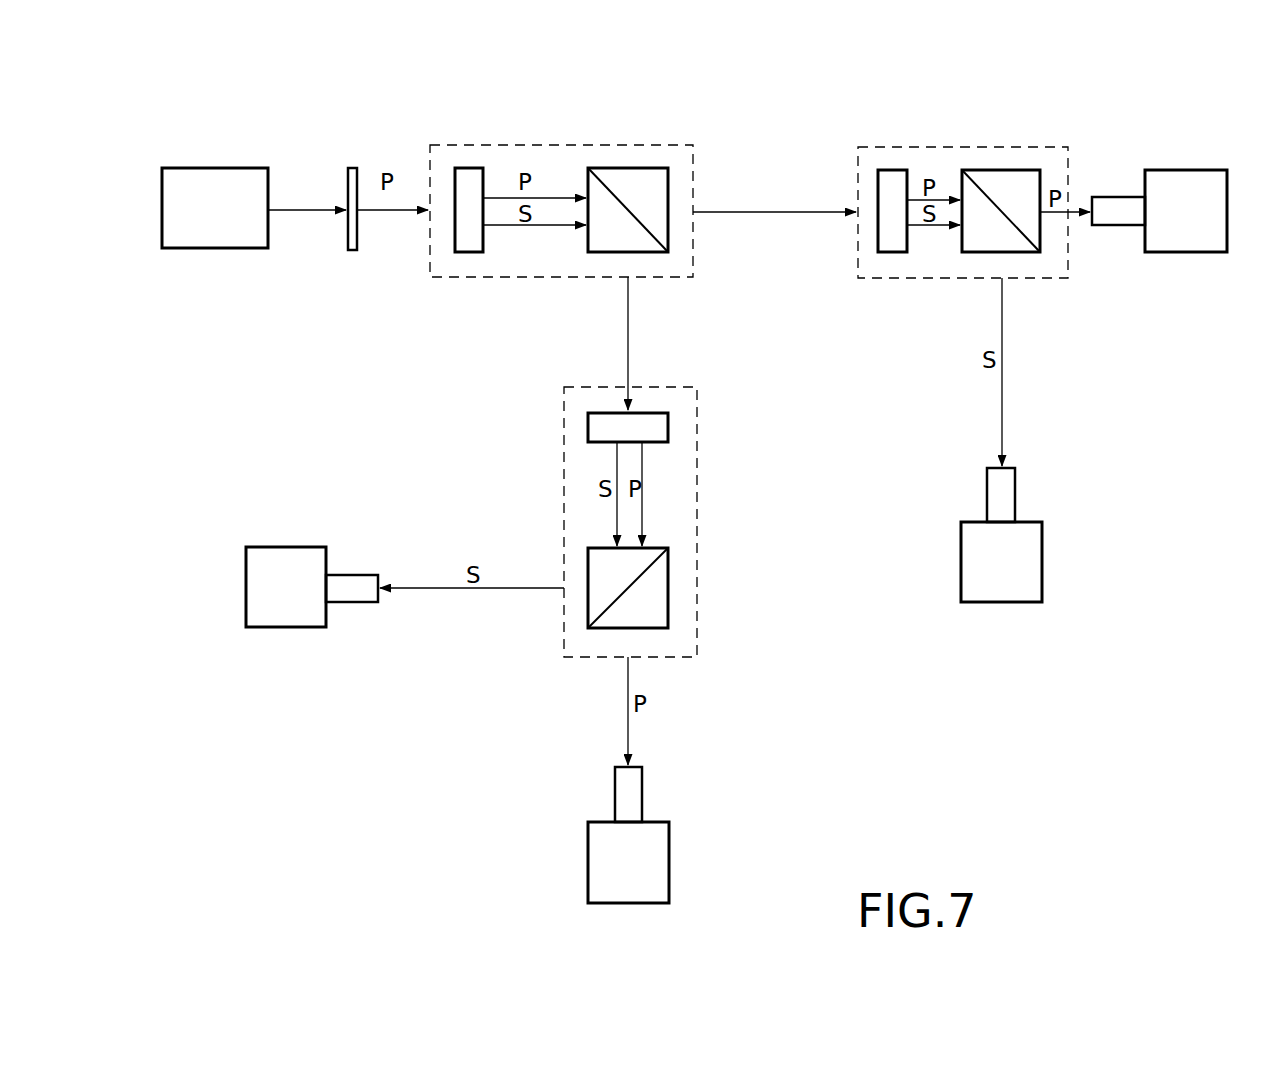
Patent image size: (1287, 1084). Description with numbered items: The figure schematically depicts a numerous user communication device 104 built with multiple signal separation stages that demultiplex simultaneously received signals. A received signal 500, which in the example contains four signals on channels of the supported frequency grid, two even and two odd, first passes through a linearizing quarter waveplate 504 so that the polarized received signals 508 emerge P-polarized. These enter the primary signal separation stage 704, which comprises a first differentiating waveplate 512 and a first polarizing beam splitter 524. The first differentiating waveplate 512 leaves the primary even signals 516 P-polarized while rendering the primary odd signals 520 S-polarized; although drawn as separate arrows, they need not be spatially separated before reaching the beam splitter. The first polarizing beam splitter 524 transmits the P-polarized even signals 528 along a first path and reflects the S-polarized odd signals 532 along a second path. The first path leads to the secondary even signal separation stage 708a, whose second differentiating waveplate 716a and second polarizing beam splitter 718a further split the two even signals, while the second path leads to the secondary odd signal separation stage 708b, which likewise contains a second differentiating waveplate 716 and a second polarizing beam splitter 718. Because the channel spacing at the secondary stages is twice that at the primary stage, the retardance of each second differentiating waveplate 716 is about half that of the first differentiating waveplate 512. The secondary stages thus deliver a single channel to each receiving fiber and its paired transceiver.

The numerous user communication device 104 is at (256, 119).
The received signal 500 is at (310, 208).
The linearizing quarter waveplate 504 is at (352, 252).
The polarized received signals 508 is at (398, 213).
The primary signal separation stage 704 is at (477, 280).
The first differentiating waveplate 512 is at (468, 166).
The primary even signals 516 is at (548, 196).
The primary odd signals 520 is at (548, 228).
The first polarizing beam splitter 524 is at (625, 166).
The even signals 528 is at (785, 215).
The odd signals 532 is at (630, 312).
The secondary even signal separation stage 708a is at (893, 146).
The second differentiating waveplate 716a is at (882, 254).
The second polarizing beam splitter 718a is at (1013, 168).
The secondary odd signal separation stage 708b is at (564, 445).
The second differentiating waveplate 716 is at (668, 431).
The second polarizing beam splitter 718 is at (668, 586).